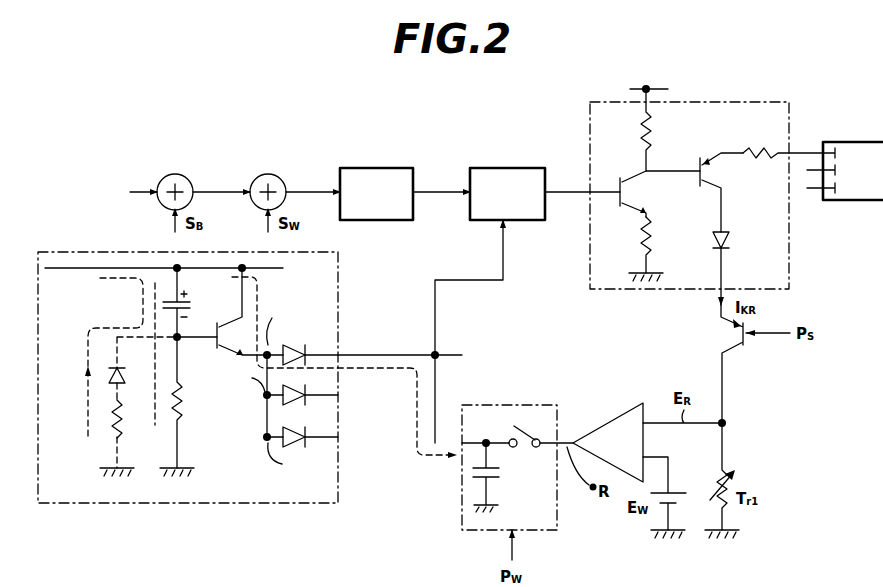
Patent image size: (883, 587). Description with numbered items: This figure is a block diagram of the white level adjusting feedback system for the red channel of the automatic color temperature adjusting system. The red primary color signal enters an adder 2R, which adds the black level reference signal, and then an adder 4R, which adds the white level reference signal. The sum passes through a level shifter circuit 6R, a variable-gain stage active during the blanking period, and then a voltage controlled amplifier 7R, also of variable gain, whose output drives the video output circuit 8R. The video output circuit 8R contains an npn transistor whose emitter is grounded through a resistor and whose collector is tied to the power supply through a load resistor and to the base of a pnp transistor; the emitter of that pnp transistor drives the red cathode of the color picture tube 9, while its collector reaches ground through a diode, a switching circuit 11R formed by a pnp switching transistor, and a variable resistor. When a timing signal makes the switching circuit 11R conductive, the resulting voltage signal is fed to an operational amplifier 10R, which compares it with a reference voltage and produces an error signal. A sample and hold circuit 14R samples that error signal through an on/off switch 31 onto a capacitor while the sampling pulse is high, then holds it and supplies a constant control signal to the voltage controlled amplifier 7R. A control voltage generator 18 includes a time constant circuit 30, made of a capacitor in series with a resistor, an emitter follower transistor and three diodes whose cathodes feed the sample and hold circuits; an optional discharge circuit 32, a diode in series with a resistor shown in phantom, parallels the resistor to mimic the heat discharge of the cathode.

The adder 2R is at (185, 176).
The adder 4R is at (278, 176).
The level shifter circuit 6R is at (388, 167).
The voltage controlled amplifier 7R is at (525, 167).
The video output circuit 8R is at (747, 100).
The color picture tube 9 is at (870, 142).
The operational amplifier 10R is at (614, 419).
The switching circuit 11R is at (736, 350).
The sample and hold circuit 14R is at (518, 440).
The control voltage generator 18 is at (188, 403).
The time constant circuit 30 is at (229, 390).
The on/off switch 31 is at (517, 457).
The discharge circuit 32 is at (112, 438).